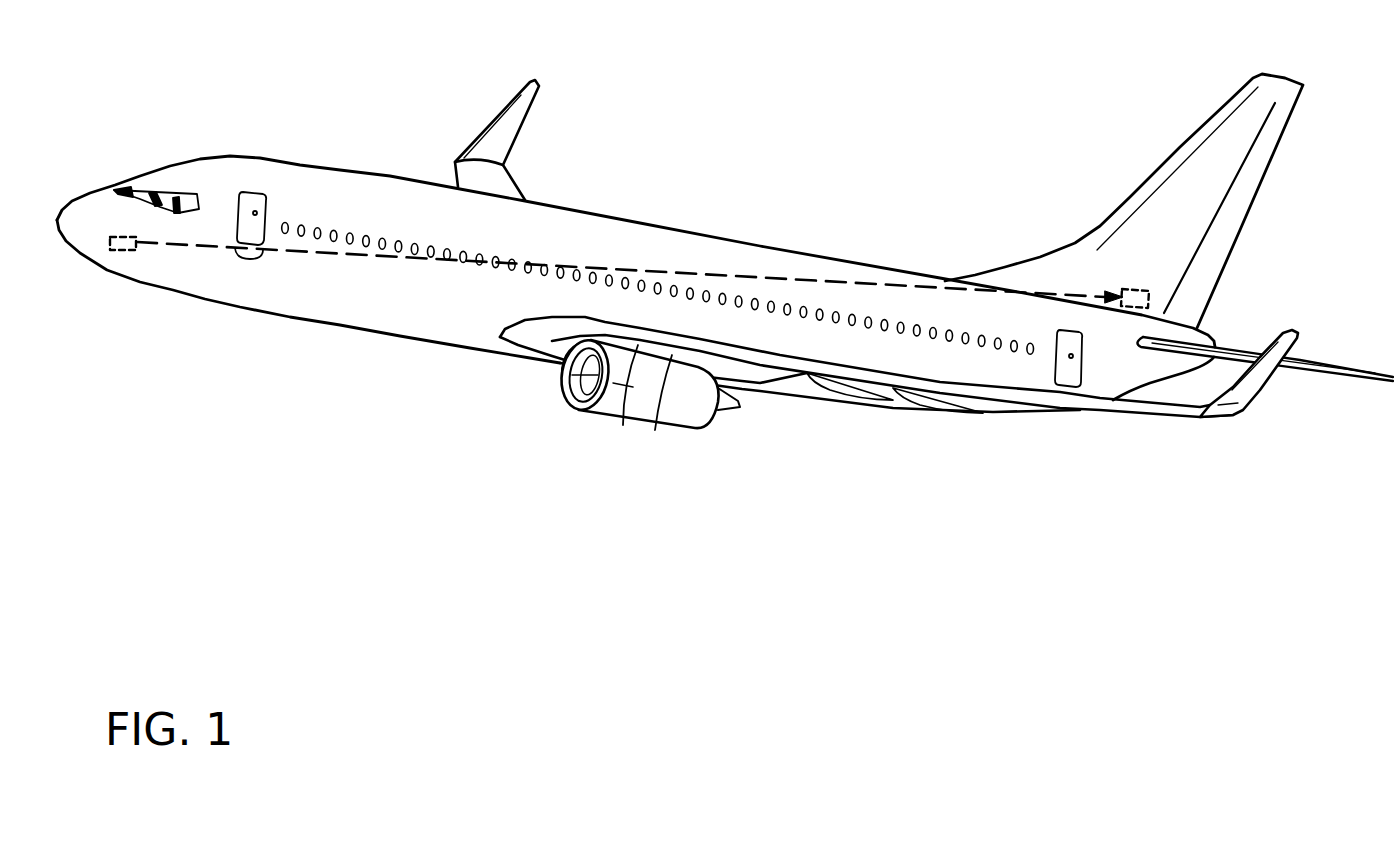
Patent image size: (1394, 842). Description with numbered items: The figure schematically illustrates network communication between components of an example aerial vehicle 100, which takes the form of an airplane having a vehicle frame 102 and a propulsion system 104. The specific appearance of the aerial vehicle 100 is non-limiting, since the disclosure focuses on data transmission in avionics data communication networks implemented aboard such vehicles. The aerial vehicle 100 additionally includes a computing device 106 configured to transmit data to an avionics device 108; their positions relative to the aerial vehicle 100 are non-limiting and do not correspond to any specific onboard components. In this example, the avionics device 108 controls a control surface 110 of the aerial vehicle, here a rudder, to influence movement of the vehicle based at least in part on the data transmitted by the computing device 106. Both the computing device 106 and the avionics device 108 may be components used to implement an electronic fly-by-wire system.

The aerial vehicle 100 is at (725, 253).
The vehicle frame 102 is at (317, 168).
The propulsion system 104 is at (571, 411).
The computing device 106 is at (118, 236).
The avionics device 108 is at (1135, 289).
The control surface 110 is at (1240, 233).